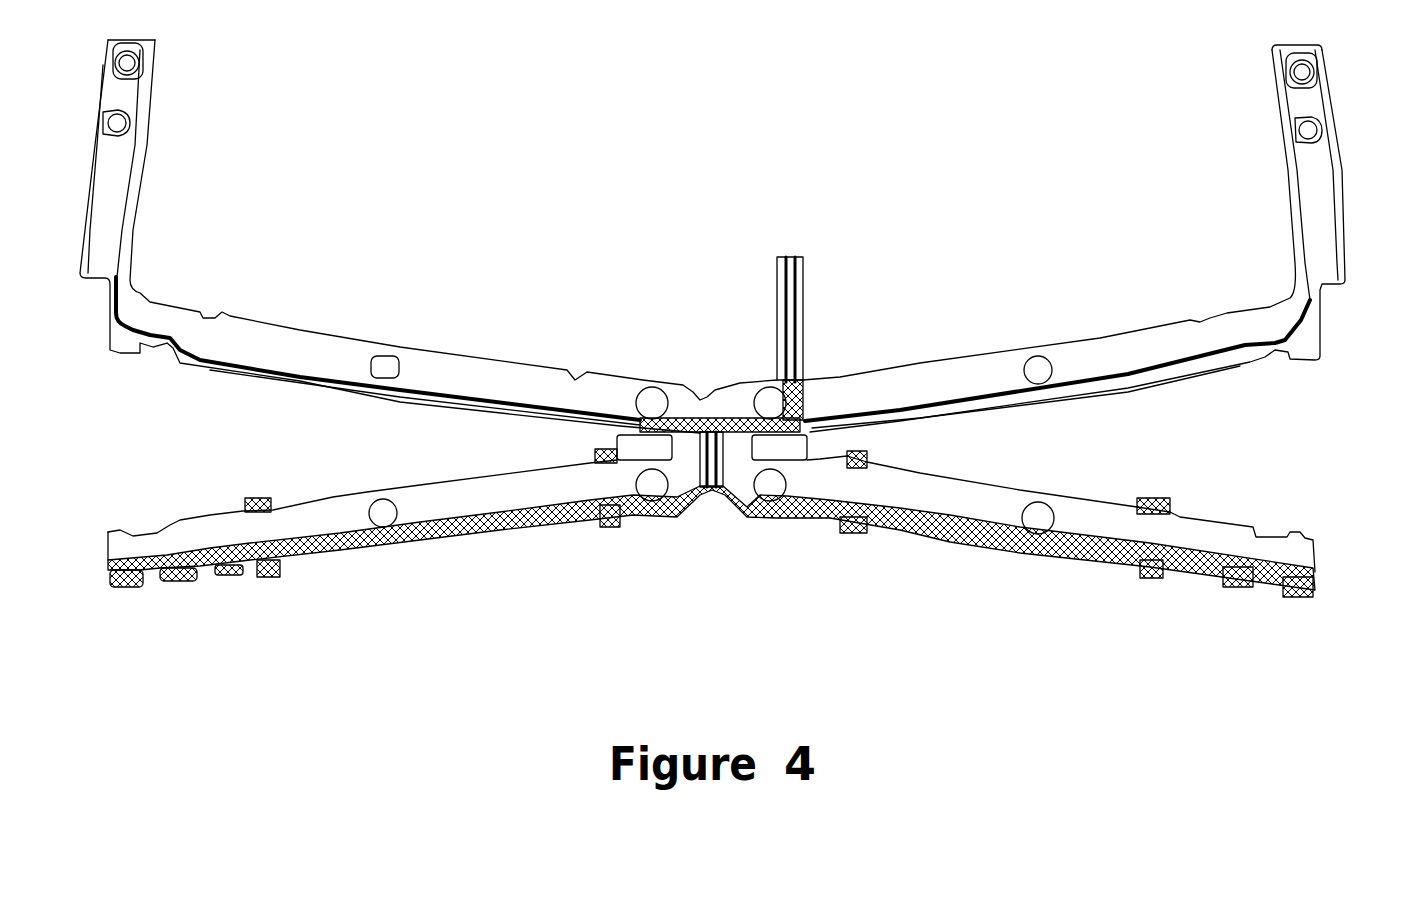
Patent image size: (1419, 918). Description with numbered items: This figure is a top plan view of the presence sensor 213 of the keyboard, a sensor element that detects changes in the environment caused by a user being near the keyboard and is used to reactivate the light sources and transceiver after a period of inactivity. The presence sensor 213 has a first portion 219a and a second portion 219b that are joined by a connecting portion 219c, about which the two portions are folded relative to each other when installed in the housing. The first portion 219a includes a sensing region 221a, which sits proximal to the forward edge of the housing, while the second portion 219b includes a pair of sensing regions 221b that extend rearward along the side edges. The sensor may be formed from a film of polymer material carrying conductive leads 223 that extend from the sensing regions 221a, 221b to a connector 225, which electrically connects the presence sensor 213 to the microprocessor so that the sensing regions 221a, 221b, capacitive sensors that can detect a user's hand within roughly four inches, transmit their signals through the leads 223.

The presence sensor 213 is at (603, 146).
The first portion 219a is at (1330, 603).
The second portion 219b is at (1340, 408).
The connecting portion 219c is at (757, 449).
The sensing region 221a is at (345, 543).
The sensing regions 221b is at (117, 173).
The conductive leads 223 is at (410, 397).
The connector 225 is at (787, 257).